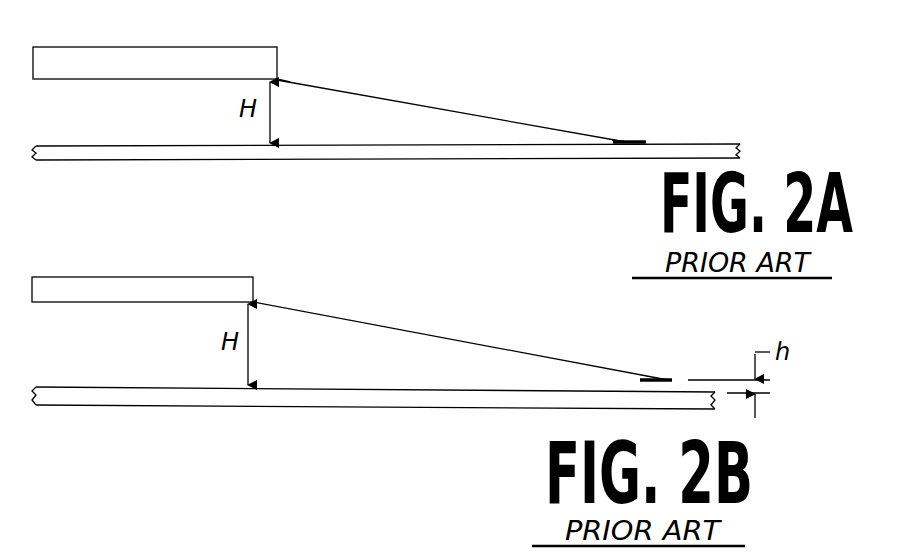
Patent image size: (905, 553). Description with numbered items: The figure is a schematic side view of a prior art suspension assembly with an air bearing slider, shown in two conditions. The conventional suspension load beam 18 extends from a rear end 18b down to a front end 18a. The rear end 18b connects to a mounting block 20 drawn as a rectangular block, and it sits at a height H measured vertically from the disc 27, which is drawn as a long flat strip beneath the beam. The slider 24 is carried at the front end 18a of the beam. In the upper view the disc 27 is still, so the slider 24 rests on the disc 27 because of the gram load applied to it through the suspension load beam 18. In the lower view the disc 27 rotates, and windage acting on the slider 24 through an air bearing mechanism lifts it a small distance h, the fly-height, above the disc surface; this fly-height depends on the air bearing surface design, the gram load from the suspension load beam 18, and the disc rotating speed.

In FIG. 2A, the suspension load beam 18 is at (416, 100).
In FIG. 2B, the suspension load beam 18 is at (340, 314).
In FIG. 2A, the front end 18a is at (623, 141).
In FIG. 2A, the rear end 18b is at (283, 79).
In FIG. 2A, the support block / anchor 20 is at (60, 47).
In FIG. 2B, the support block / anchor 20 is at (80, 277).
In FIG. 2A, the slider 24 is at (637, 141).
In FIG. 2B, the slider 24 is at (661, 378).
In FIG. 2A, the disc 27 is at (190, 161).
In FIG. 2B, the disc 27 is at (140, 396).